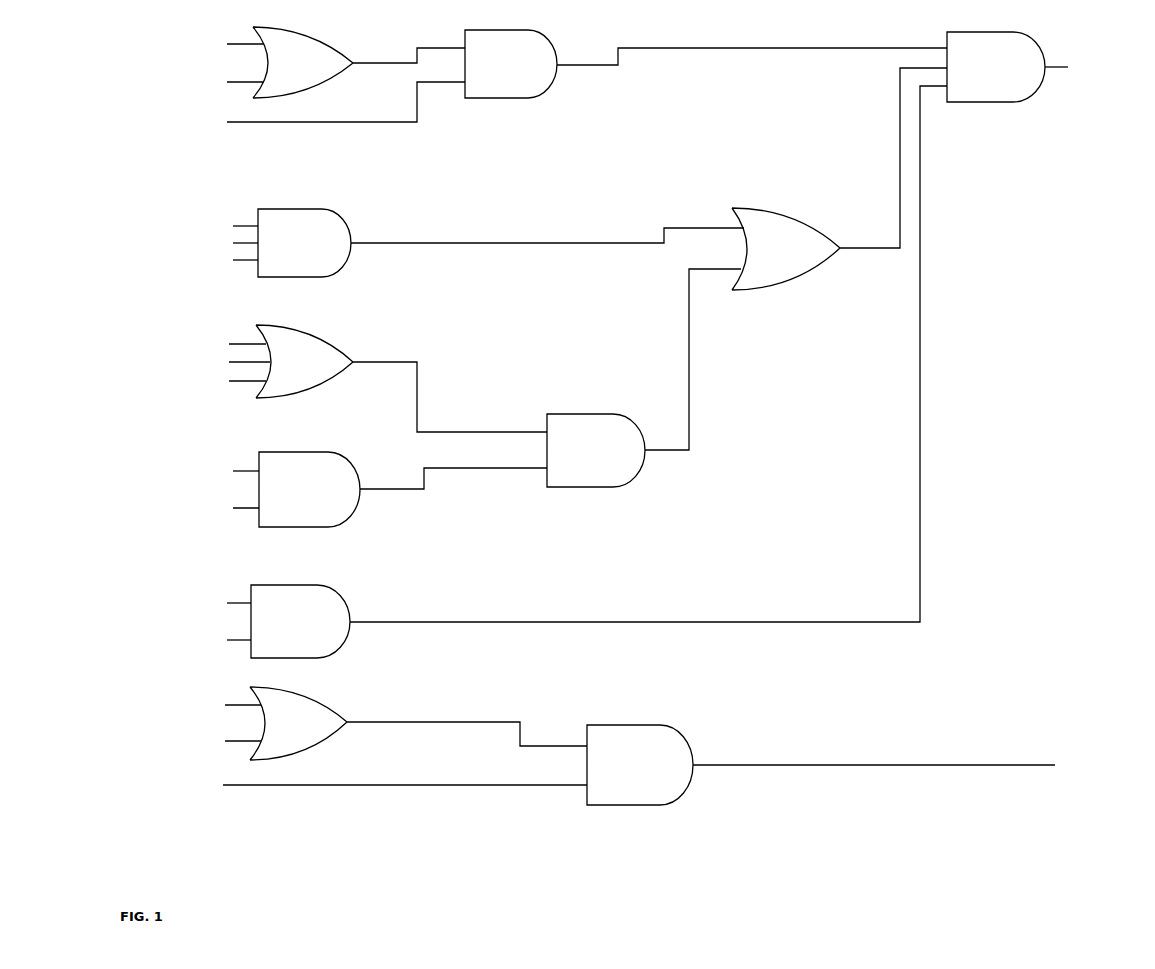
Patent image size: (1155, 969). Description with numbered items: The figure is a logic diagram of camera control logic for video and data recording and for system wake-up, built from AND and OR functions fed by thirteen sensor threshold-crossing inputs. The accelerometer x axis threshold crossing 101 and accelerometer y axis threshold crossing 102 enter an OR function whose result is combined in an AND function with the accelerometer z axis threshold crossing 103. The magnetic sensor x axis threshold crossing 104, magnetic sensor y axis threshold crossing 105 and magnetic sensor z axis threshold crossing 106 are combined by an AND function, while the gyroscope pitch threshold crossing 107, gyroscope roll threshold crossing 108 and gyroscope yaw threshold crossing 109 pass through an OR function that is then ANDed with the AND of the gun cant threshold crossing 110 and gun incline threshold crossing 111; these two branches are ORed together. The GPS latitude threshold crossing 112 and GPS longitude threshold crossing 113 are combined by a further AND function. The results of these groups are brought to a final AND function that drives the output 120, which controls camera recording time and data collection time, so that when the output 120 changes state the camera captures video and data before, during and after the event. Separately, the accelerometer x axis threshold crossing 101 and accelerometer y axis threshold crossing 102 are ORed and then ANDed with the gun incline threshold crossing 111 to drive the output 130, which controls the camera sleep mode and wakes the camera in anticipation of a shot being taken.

The accelerometer x axis threshold crossing 101 is at (224, 375).
The accelerometer y axis threshold crossing 102 is at (224, 412).
The accelerometer z axis threshold crossing 103 is at (325, 106).
The magnetic sensor x axis threshold crossing 104 is at (227, 226).
The magnetic sensor y axis threshold crossing 105 is at (227, 243).
The magnetic sensor z axis threshold crossing 106 is at (227, 260).
The gyroscope pitch threshold crossing 107 is at (231, 344).
The gyroscope roll threshold crossing 108 is at (233, 362).
The gyroscope yaw threshold crossing 109 is at (231, 381).
The gun cant threshold crossing 110 is at (228, 471).
The gun incline threshold crossing 111 is at (391, 647).
The GPS latitude threshold crossing 112 is at (224, 603).
The GPS longitude threshold crossing 113 is at (224, 640).
The output 120 is at (1032, 67).
The output 130 is at (847, 765).